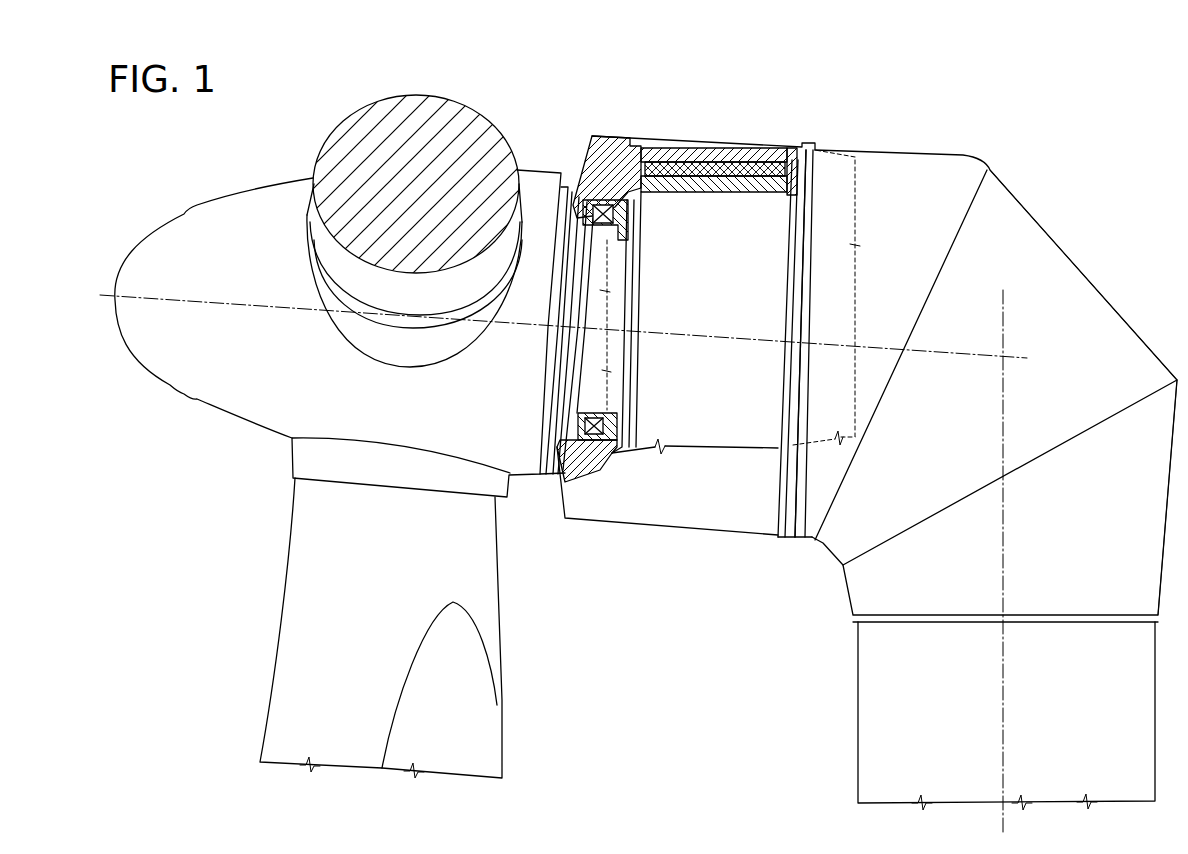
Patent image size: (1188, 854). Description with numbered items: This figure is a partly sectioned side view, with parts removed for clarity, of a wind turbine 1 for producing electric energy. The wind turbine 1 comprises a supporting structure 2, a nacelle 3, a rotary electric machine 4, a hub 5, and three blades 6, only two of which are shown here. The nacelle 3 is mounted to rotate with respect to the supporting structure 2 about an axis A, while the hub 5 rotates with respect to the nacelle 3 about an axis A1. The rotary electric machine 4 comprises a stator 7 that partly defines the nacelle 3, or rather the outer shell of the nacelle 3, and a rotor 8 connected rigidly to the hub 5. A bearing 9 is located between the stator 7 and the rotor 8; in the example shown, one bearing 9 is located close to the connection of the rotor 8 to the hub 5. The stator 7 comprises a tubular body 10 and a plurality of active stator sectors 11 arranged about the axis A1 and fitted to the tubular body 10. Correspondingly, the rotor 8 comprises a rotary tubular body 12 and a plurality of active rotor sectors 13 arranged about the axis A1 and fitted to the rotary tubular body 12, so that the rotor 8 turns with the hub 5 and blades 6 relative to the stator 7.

The wind turbine 1 is at (1035, 146).
The supporting structure 2 is at (908, 715).
The nacelle 3 is at (1052, 258).
The rotary electric machine 4 is at (729, 125).
The hub 5 is at (547, 162).
The blade 6 is at (318, 222).
The stator 7 is at (806, 173).
The rotor 8 is at (818, 198).
The bearing 9 is at (570, 452).
The tubular body 10 is at (660, 140).
The active stator sectors 11 is at (670, 148).
The rotary tubular body 12 is at (747, 150).
The active rotor sectors 13 is at (694, 148).
The axis A is at (1007, 508).
The axis A1 is at (921, 353).